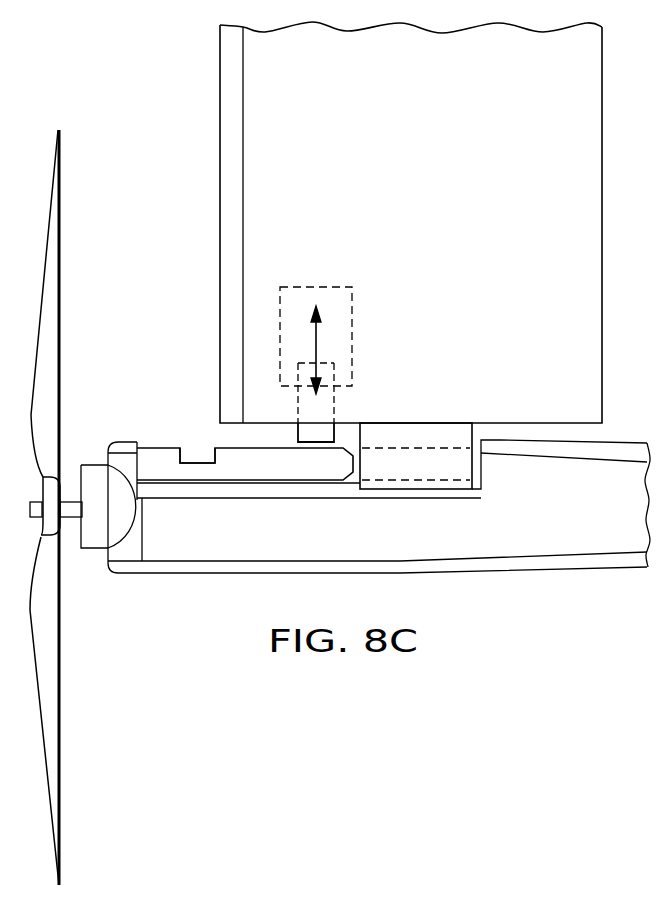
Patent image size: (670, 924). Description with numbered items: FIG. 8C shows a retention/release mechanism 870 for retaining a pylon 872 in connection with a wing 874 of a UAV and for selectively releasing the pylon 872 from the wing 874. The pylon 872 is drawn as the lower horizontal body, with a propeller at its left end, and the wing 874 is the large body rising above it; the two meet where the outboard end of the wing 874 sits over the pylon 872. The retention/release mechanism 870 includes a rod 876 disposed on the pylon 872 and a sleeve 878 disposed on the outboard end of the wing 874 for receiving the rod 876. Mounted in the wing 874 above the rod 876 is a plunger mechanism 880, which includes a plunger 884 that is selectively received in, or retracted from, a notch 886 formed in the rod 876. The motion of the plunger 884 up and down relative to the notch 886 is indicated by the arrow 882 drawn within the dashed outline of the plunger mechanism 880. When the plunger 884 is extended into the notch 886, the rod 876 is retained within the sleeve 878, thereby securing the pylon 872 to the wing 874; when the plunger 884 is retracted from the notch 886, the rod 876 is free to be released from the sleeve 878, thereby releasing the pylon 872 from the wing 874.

The retention/release mechanism 870 is at (501, 475).
The pylon 872 is at (181, 575).
The wing 874 is at (220, 222).
The rod 876 is at (247, 468).
The sleeve 878 is at (398, 490).
The plunger mechanism 880 is at (352, 402).
The arrow 882 is at (318, 335).
The plunger 884 is at (316, 434).
The notch 886 is at (194, 458).